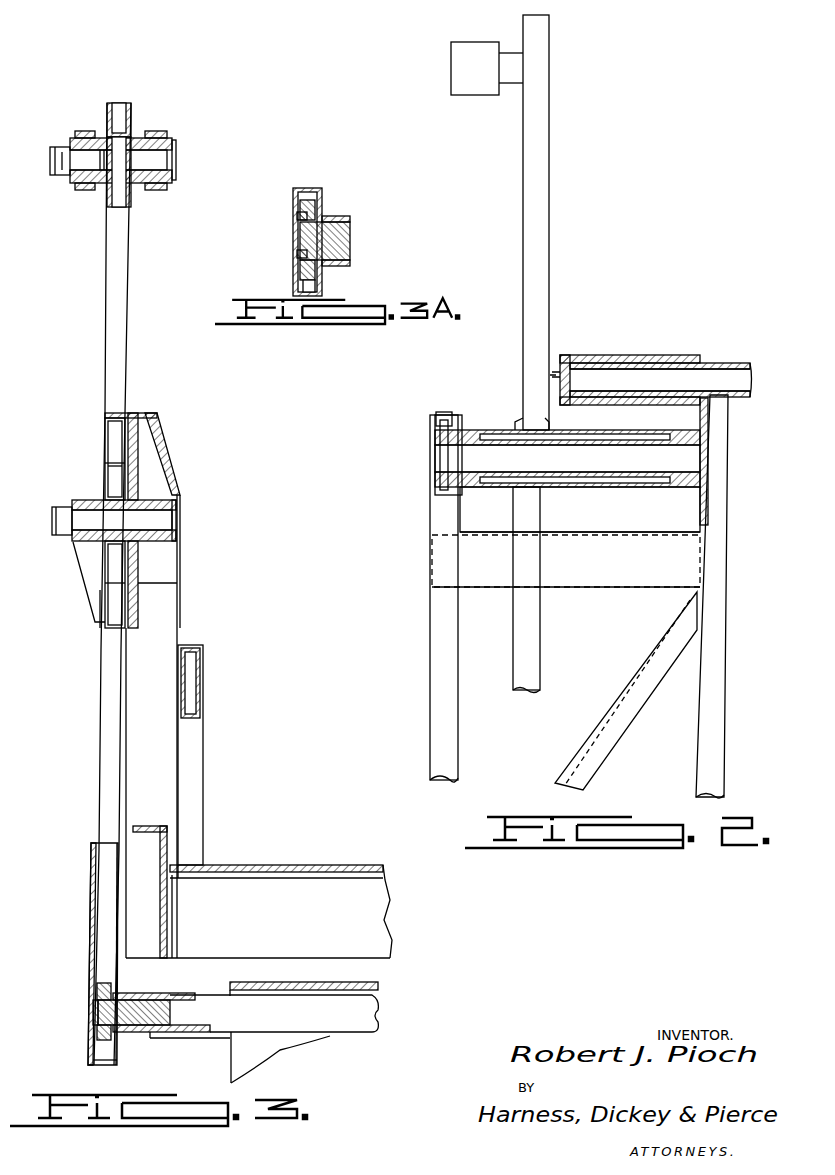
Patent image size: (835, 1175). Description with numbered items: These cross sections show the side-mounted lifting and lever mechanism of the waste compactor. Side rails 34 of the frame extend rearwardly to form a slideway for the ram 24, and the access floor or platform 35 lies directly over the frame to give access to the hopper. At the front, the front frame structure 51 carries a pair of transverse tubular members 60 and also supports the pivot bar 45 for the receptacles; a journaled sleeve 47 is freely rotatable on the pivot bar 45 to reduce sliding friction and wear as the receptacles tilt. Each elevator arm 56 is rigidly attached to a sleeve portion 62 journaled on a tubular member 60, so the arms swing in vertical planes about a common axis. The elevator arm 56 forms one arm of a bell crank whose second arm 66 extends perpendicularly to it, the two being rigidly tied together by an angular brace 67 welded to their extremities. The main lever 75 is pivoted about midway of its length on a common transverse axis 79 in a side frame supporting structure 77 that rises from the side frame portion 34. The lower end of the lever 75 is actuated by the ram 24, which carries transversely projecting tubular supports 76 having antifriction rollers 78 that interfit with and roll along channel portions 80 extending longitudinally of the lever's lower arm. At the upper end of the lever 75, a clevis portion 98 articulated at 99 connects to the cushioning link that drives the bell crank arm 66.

In FIG. 3, the ram 24 is at (385, 982).
In FIG. 3, the side rails 34 is at (150, 828).
In FIG. 3, the access floor or platform 35 is at (352, 865).
In FIG. 2, the pivot bar 45 is at (750, 365).
In FIG. 2, the journaled sleeve 47 is at (612, 355).
In FIG. 2, the front frame structure 51 is at (697, 705).
In FIG. 3, the elevator arms 56 is at (192, 735).
In FIG. 2, the elevator arms 56 is at (535, 625).
In FIG. 2, the tubular members 60 is at (598, 455).
In FIG. 2, the sleeve portions 62 is at (620, 495).
In FIG. 2, the second arm of the bell crank 66 is at (540, 213).
In FIG. 2, the angular brace 67 is at (451, 82).
In FIG. 3, the main levers 75 is at (96, 830).
In FIG. 3A, the main levers 75 is at (293, 188).
In FIG. 3, the tubular supports 76 is at (212, 1000).
In FIG. 3A, the tubular supports 76 is at (345, 222).
In FIG. 3, the side frame supporting structure 77 is at (165, 612).
In FIG. 3, the antifriction rollers 78 is at (98, 995).
In FIG. 3A, the antifriction rollers 78 is at (300, 216).
In FIG. 3, the common transverse axis 79 is at (52, 522).
In FIG. 3, the channel portions 80 is at (91, 955).
In FIG. 3A, the channel portions 80 is at (318, 188).
In FIG. 3, the clevis portion 98 is at (88, 188).
In FIG. 3, the pivot of clevis 99 is at (52, 160).